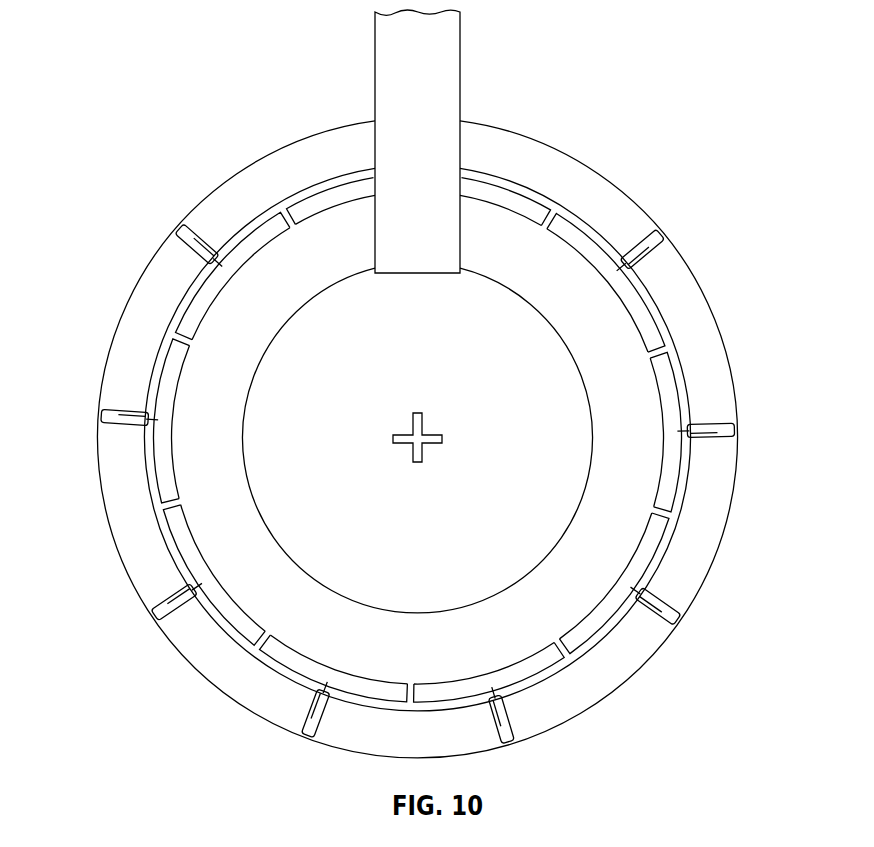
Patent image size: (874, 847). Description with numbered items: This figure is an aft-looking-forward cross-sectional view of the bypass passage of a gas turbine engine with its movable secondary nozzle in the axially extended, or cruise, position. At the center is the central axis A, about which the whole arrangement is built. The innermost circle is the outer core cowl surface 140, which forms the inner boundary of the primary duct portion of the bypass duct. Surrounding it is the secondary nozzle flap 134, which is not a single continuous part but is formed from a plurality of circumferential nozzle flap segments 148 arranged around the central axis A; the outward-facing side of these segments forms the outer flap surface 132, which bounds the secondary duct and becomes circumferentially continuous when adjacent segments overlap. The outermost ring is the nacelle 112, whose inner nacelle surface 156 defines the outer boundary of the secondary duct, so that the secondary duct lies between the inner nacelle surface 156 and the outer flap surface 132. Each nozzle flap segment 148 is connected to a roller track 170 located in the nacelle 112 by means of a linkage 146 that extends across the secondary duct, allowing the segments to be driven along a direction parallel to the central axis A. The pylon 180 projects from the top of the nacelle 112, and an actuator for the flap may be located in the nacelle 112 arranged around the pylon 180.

The nacelle 112 is at (426, 439).
The outer flap surface 132 is at (680, 360).
The secondary nozzle flap 134 is at (162, 450).
The outer core cowl surface 140 is at (350, 446).
The linkage 146 is at (203, 278).
The circumferential flap segments 148 is at (356, 414).
The inner nacelle surface 156 is at (421, 439).
The roller track 170 is at (715, 632).
The pylon 180 is at (432, 78).
The central axis A is at (423, 425).